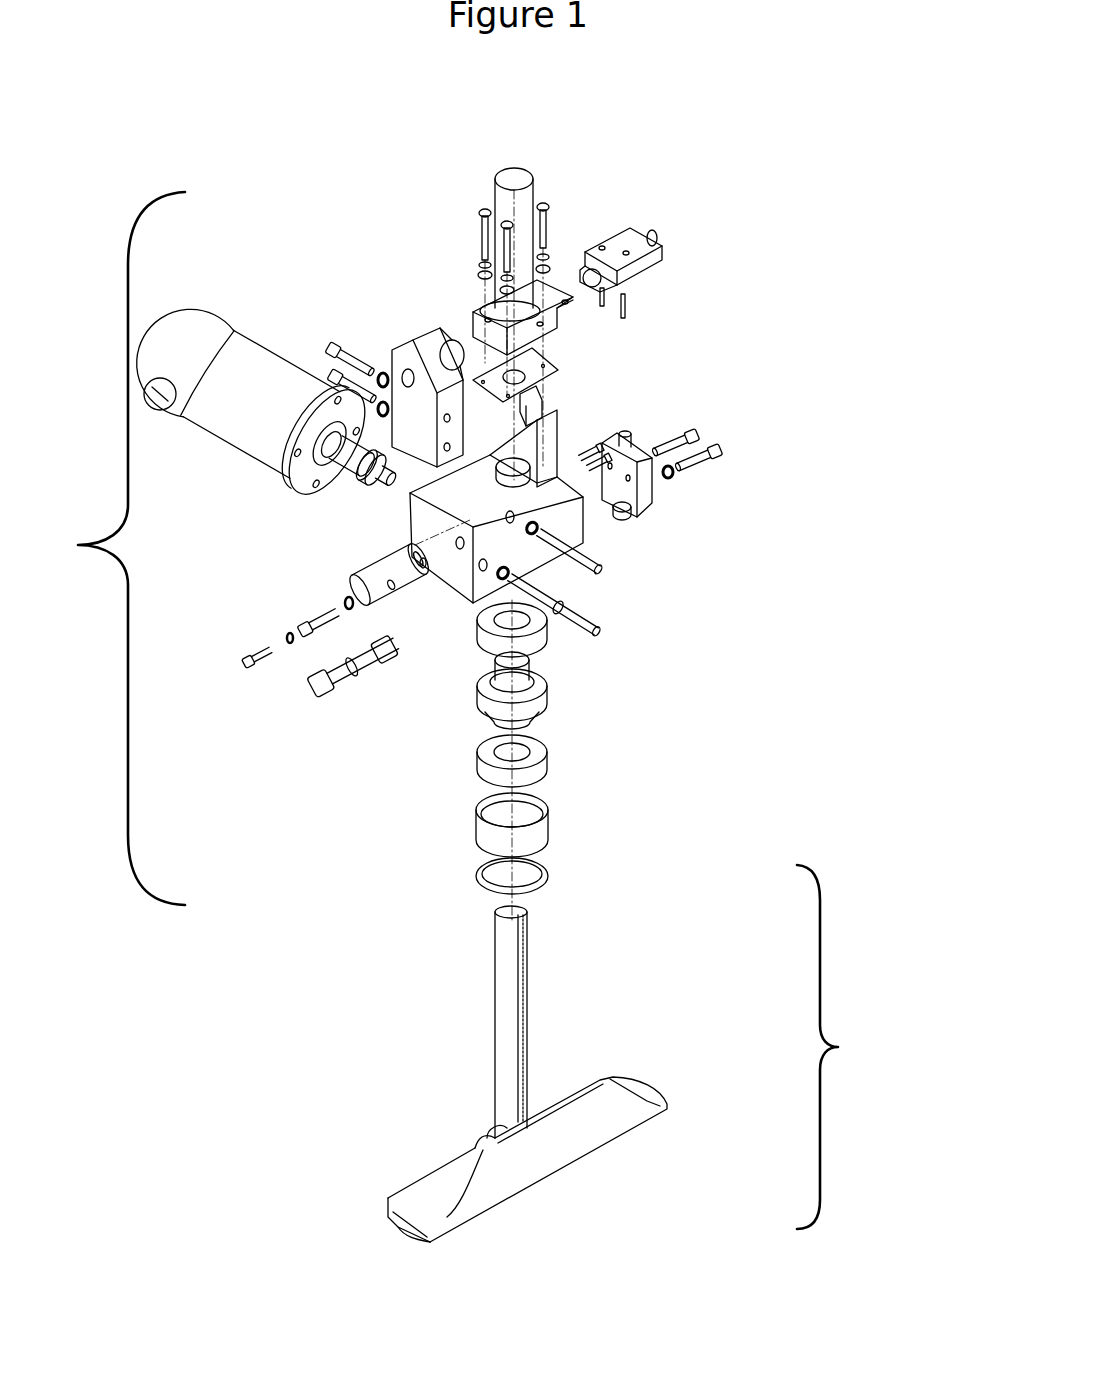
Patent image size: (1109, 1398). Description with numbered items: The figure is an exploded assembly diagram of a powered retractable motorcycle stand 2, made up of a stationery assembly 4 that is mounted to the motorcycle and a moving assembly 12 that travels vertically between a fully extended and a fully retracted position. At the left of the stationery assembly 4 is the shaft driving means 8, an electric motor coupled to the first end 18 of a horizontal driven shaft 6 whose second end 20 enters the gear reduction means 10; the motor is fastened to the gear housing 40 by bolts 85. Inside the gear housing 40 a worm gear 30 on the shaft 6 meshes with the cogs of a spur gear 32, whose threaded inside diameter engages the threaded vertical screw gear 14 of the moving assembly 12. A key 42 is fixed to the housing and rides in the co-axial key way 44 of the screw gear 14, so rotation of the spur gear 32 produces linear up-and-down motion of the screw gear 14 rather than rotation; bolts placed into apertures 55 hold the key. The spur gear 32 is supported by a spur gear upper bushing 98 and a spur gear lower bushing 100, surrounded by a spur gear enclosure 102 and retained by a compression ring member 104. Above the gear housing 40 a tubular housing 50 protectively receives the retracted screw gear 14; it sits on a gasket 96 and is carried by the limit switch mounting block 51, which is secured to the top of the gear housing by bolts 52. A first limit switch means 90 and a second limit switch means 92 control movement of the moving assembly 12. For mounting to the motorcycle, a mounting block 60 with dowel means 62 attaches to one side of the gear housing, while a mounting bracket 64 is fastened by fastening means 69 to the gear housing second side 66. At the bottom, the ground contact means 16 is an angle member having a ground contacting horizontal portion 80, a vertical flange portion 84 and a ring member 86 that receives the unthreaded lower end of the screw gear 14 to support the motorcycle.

The powered retractable motorcycle stand 2 is at (762, 268).
The stationery assembly 4 is at (110, 968).
The horizontal driven shaft 6 is at (366, 488).
The shaft driving means 8 is at (226, 466).
The gear reduction means 10 is at (602, 541).
The moving assembly 12 is at (850, 976).
The threaded vertical screw gear 14 is at (490, 964).
The ground contact means 16 is at (477, 1113).
The first end 18 is at (322, 462).
The second end 20 is at (382, 486).
The worm gear 30 is at (358, 450).
The spur gear 32 is at (552, 700).
The gear housing 40 is at (563, 464).
The key 42 is at (543, 398).
The key way 44 is at (529, 950).
The tubular housing 50 is at (518, 178).
The limit switch mounting block 51 is at (590, 437).
The bolts 52 is at (552, 214).
The apertures 55 is at (466, 316).
The mounting block 60 is at (398, 340).
The dowel means 62 is at (440, 342).
The mounting bracket 64 is at (380, 610).
The second side 66 is at (458, 586).
The fastening means 69 is at (334, 342).
The ground contacting horizontal portion 80 is at (408, 1188).
The vertical flange portion 84 is at (578, 1130).
The bolts 85 is at (562, 604).
The ring member 86 is at (480, 1134).
The first limit switch means 90 is at (636, 240).
The second limit switch means 92 is at (643, 451).
The gasket 96 is at (553, 361).
The spur gear upper bushing 98 is at (548, 640).
The spur gear lower bushing 100 is at (548, 762).
The spur gear enclosure 102 is at (552, 814).
The compression ring member 104 is at (470, 862).